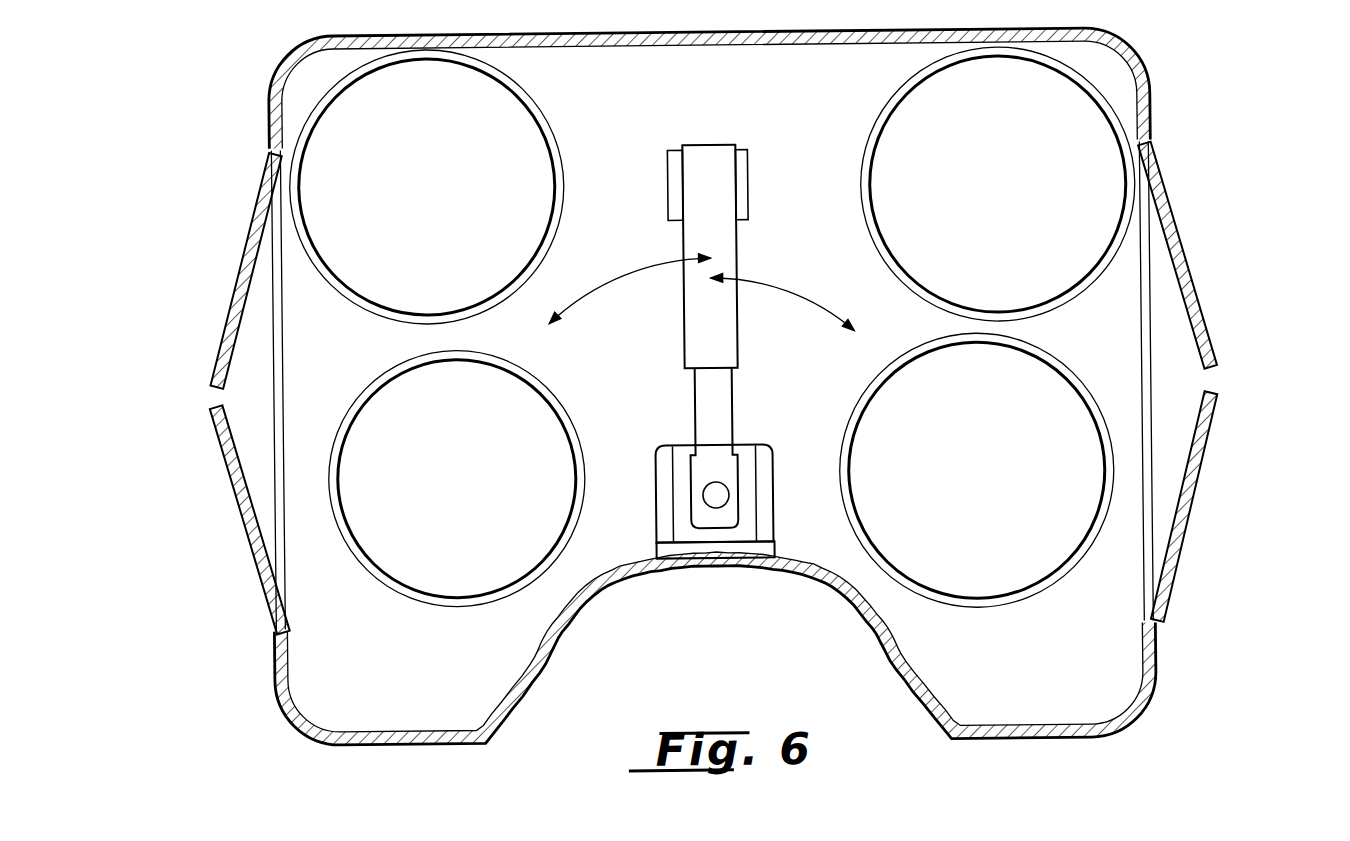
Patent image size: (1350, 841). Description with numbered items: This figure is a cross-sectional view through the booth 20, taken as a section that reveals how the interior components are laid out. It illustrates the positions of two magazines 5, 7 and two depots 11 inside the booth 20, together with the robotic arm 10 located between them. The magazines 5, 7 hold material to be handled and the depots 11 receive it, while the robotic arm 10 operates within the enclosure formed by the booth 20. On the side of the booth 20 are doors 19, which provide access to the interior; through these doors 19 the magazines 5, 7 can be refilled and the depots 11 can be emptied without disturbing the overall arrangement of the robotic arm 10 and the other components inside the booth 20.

The magazine 5 is at (1053, 543).
The magazine 7 is at (368, 519).
The robotic arm 10 is at (715, 243).
The depot 11 is at (508, 110).
The doors 19 is at (200, 357).
The booth 20 is at (273, 100).